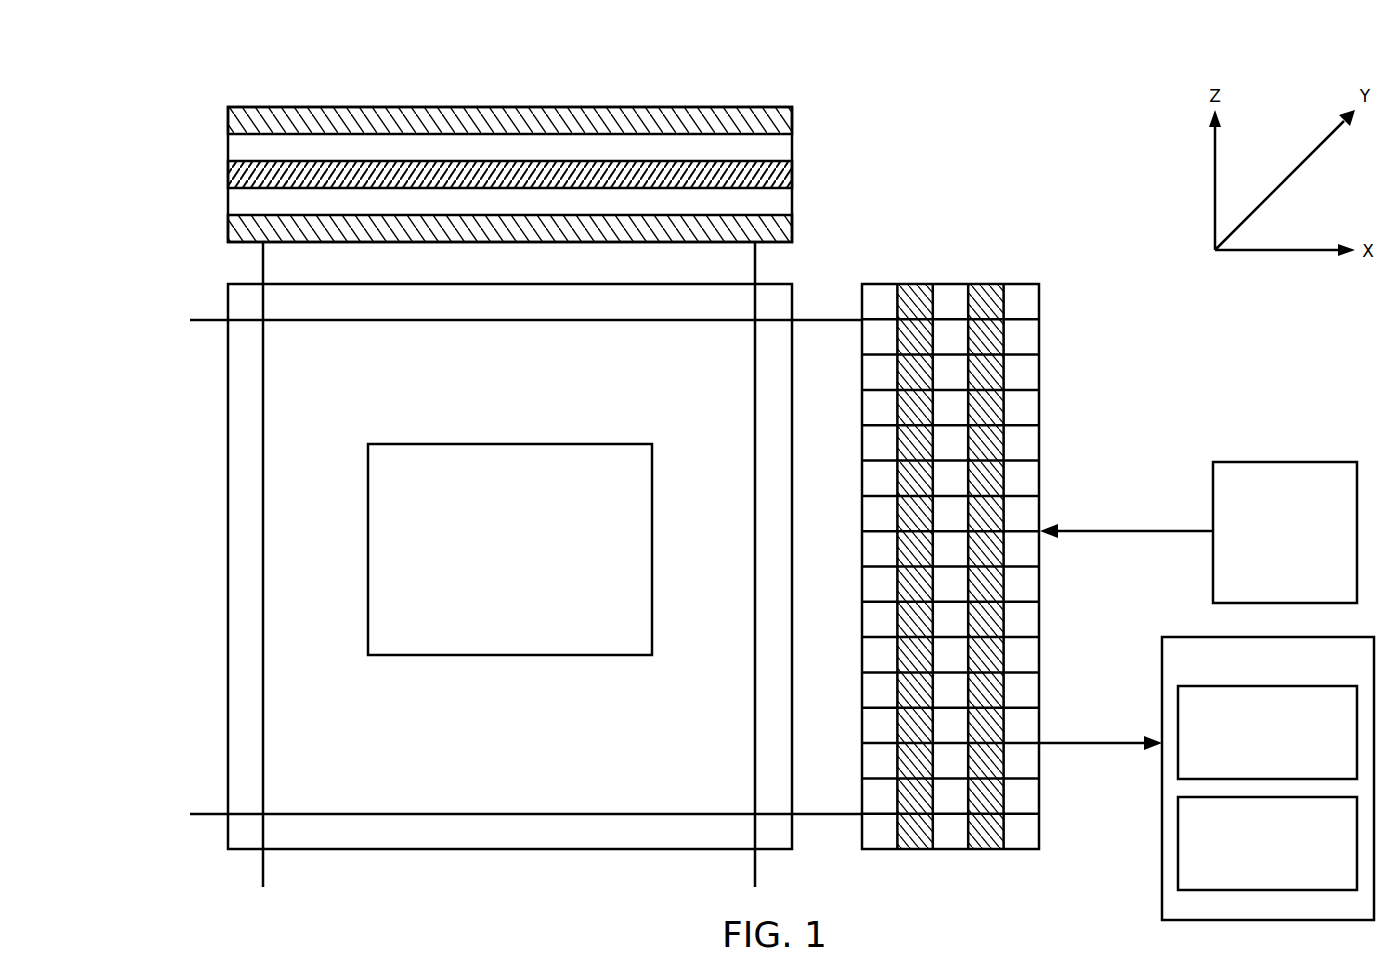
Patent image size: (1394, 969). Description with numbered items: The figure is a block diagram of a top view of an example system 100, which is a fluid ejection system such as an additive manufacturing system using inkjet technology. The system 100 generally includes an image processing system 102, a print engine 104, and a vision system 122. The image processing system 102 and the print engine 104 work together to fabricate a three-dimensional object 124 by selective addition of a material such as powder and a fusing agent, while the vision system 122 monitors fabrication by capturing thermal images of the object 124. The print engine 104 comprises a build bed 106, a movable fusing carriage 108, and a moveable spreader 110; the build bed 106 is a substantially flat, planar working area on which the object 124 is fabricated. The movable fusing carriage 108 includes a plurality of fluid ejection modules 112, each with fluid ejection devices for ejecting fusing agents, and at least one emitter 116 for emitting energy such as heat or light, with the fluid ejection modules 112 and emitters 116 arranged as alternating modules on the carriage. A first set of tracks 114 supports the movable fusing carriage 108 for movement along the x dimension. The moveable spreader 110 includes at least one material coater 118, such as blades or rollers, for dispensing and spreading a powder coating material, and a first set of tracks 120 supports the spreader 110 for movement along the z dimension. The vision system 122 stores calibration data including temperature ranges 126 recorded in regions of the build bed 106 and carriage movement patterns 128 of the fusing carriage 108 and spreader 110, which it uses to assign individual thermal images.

The system 100 is at (147, 56).
The image processing system 102 is at (1303, 541).
The print engine 104 is at (1040, 91).
The build bed 106 is at (527, 780).
The movable fusing carriage 108 is at (1040, 283).
The moveable spreader 110 is at (792, 108).
The fluid ejection modules 112 is at (875, 294).
The first set of tracks 114 is at (200, 320).
The emitters 116 is at (915, 852).
The material coaters 118 is at (228, 120).
The first set of tracks 120 is at (263, 867).
The vision system 122 is at (1286, 670).
The three-dimensional object 124 is at (528, 560).
The temperature ranges 126 is at (1250, 771).
The carriage movement patterns 128 is at (1250, 882).